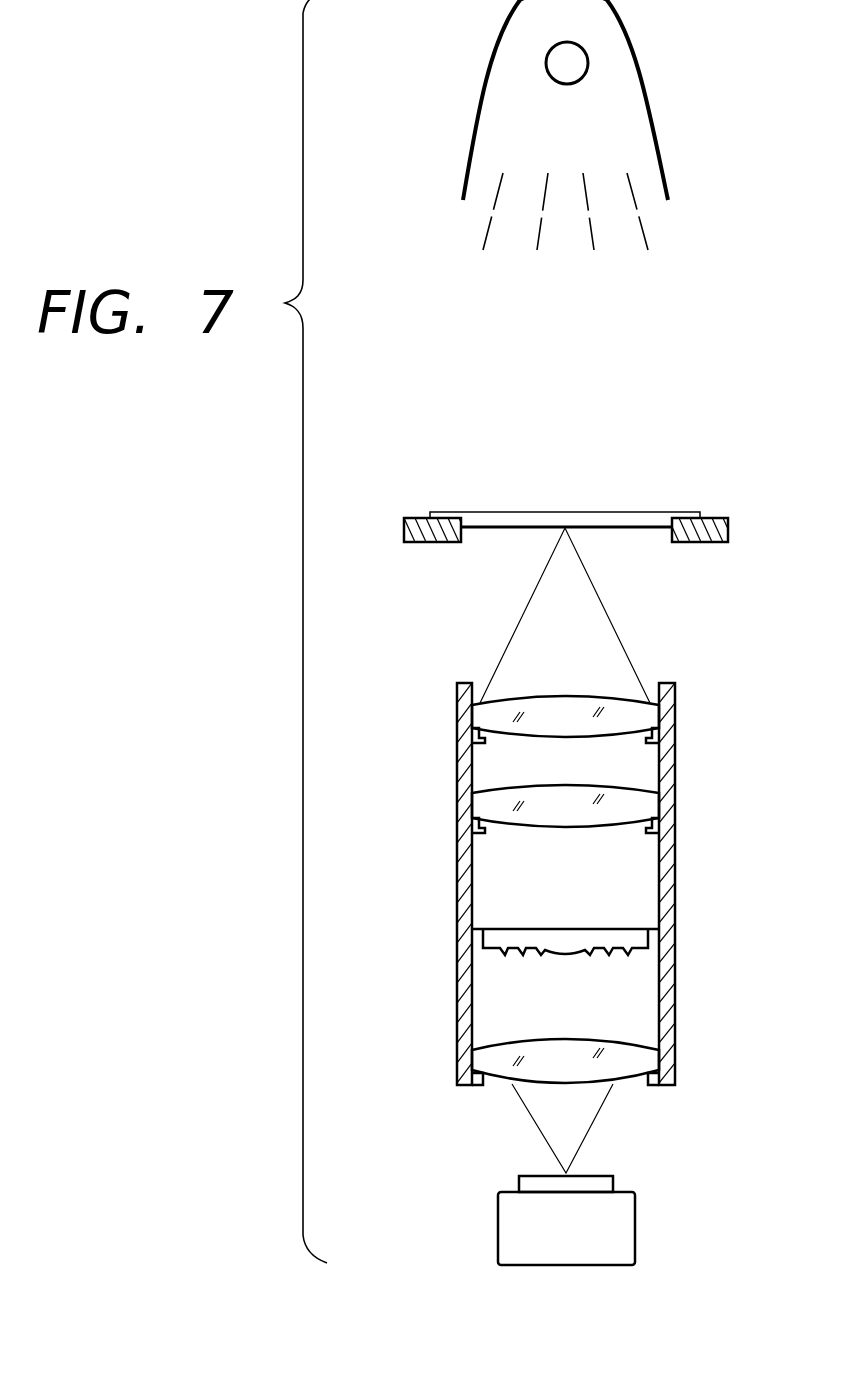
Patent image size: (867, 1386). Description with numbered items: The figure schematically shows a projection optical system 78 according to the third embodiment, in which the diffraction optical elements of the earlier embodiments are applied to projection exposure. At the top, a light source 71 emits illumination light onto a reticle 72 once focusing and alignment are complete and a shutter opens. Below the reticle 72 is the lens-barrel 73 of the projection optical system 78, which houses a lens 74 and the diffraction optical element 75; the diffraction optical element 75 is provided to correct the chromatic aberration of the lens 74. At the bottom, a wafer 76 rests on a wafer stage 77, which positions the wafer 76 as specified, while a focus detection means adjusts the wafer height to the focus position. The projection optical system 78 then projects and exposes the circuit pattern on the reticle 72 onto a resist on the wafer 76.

The light source 71 is at (635, 84).
The reticle 72 is at (620, 518).
The lens-barrel 73 is at (675, 718).
The lens 74 is at (543, 800).
The diffraction optical element 75 is at (543, 937).
The wafer 76 is at (613, 1180).
The wafer stage 77 is at (620, 1217).
The projection optical system 78 is at (703, 647).